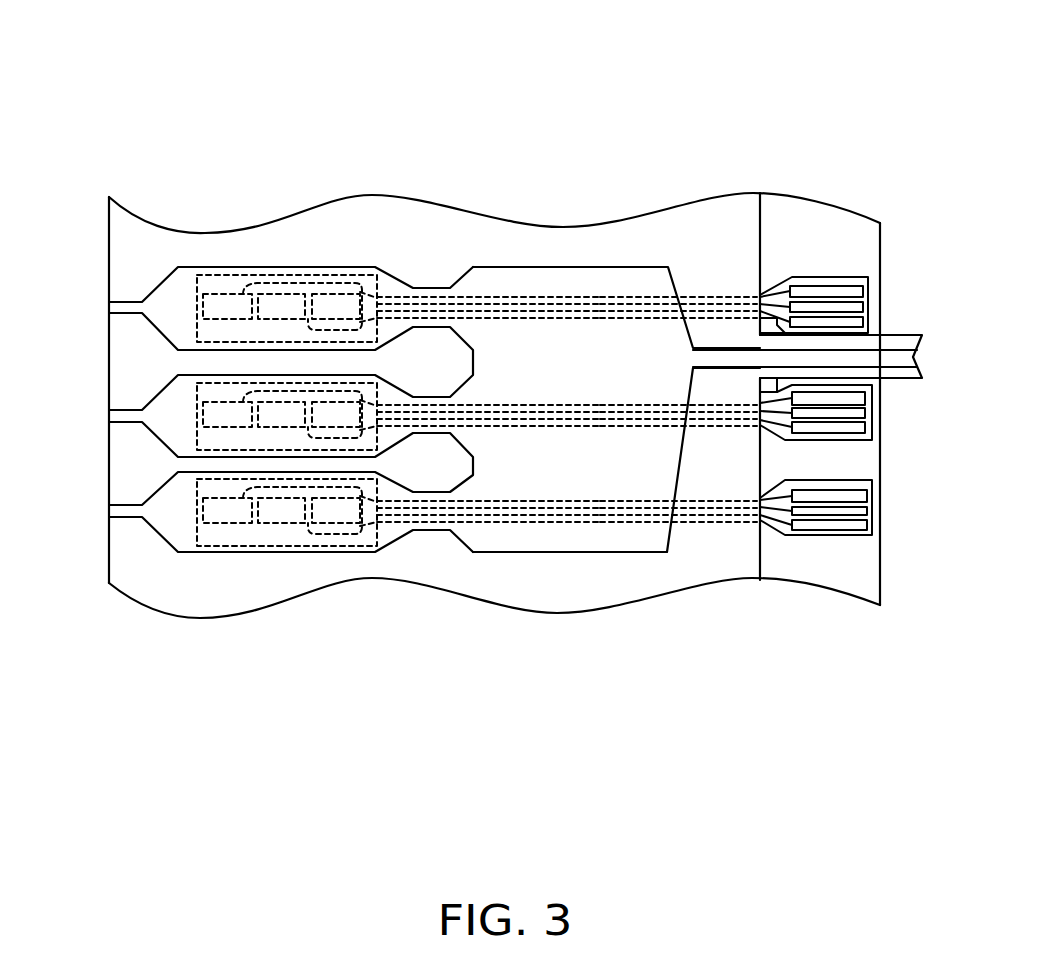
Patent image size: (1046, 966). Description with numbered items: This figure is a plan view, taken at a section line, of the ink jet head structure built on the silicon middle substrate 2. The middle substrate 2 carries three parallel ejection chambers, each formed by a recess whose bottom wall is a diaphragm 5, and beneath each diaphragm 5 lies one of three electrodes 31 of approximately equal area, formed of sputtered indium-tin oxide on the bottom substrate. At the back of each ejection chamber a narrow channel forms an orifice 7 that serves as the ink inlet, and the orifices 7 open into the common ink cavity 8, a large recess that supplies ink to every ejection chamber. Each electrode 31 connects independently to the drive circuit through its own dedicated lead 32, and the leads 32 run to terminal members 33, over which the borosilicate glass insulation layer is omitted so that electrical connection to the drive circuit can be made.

The middle substrate 2 is at (247, 227).
The electrode 31 is at (327, 266).
The diaphragm 5 is at (348, 312).
The orifice 7 is at (430, 292).
The common ink cavity 8 is at (560, 455).
The lead 32 is at (715, 522).
The terminal member 33 is at (832, 525).